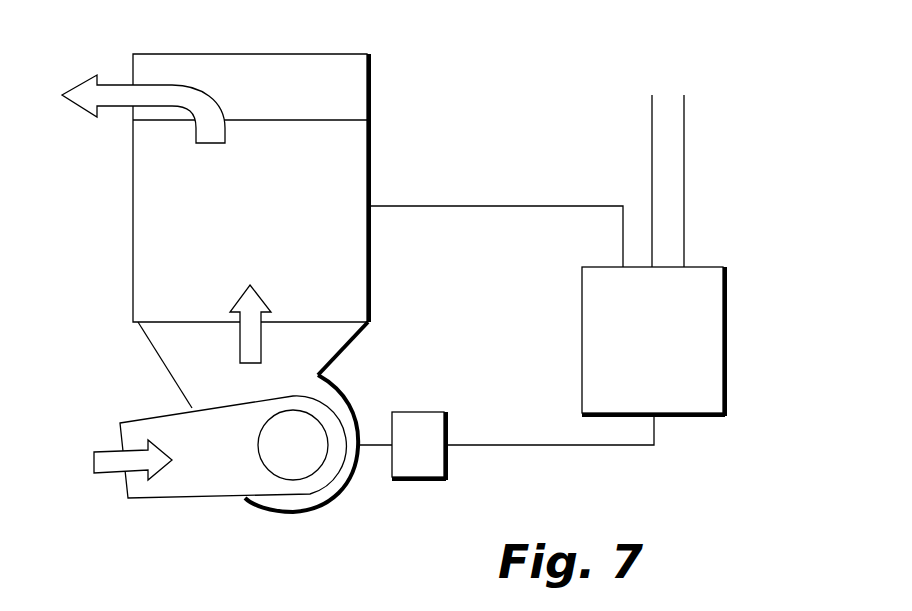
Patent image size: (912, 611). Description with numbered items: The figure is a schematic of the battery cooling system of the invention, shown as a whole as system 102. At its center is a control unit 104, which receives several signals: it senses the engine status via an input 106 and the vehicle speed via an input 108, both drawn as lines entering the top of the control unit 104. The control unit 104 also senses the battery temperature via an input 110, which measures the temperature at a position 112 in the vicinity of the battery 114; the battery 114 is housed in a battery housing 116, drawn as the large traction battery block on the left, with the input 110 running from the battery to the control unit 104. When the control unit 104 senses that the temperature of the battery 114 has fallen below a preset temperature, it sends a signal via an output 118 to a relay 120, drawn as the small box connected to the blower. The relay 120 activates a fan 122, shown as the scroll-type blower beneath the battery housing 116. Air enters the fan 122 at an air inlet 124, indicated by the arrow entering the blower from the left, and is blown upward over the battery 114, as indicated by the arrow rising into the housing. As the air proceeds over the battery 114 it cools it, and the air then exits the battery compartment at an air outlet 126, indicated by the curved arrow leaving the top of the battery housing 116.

The system 102 is at (717, 107).
The control unit 104 is at (710, 265).
The input 106 is at (652, 138).
The input 108 is at (684, 158).
The input 110 is at (510, 205).
The position 112 is at (368, 204).
The battery 114 is at (350, 144).
The battery housing 116 is at (370, 70).
The output 118 is at (528, 446).
The relay 120 is at (420, 412).
The fan 122 is at (303, 455).
The air inlet 124 is at (123, 472).
The air outlet 126 is at (116, 82).